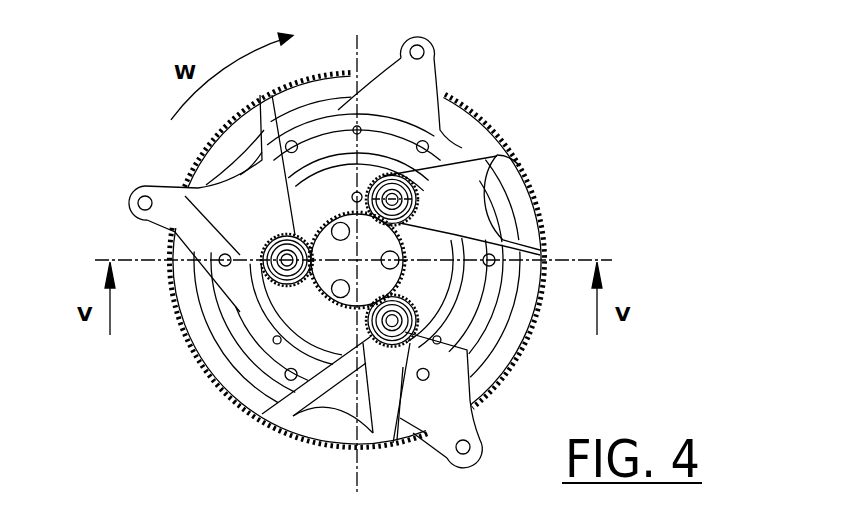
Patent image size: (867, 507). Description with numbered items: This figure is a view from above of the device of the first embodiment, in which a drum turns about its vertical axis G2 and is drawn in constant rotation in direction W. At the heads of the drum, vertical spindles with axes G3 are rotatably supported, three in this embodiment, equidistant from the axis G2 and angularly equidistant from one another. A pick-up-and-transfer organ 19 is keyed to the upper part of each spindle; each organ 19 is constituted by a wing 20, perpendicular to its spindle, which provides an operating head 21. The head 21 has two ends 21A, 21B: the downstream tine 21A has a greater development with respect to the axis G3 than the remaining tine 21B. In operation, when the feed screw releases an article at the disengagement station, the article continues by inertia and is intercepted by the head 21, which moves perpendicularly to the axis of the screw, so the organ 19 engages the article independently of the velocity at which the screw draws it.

The pick-up-and-transfer organ 19 is at (477, 113).
The wing 20 is at (492, 154).
The operating head 21 is at (485, 201).
The end of the head 21A is at (548, 234).
The end of the head 21B is at (495, 157).
The vertical axis of the drum G2 is at (318, 272).
The axes of the spindles G3 is at (300, 282).